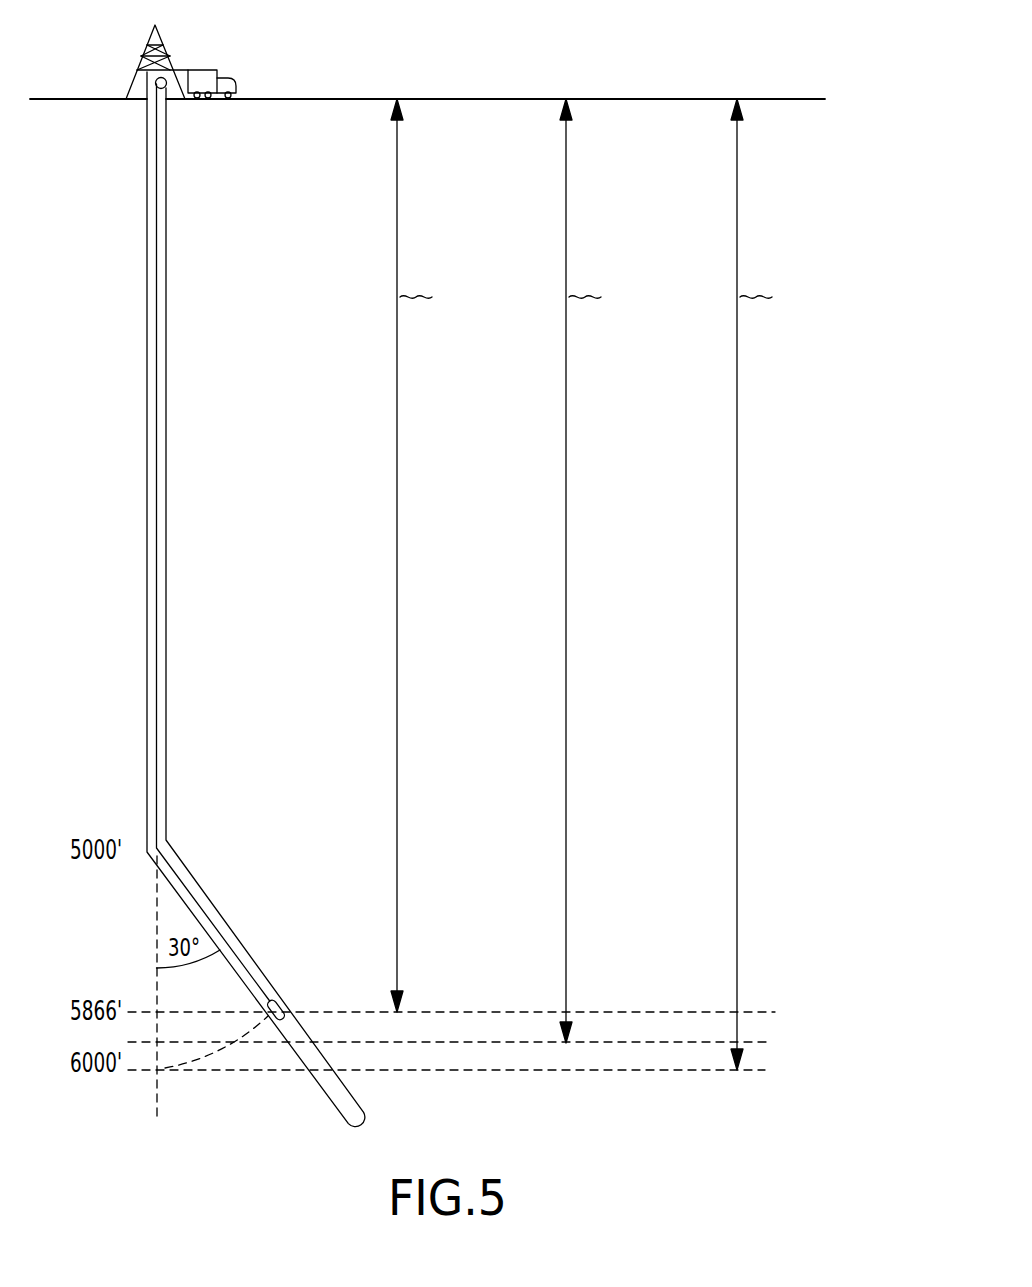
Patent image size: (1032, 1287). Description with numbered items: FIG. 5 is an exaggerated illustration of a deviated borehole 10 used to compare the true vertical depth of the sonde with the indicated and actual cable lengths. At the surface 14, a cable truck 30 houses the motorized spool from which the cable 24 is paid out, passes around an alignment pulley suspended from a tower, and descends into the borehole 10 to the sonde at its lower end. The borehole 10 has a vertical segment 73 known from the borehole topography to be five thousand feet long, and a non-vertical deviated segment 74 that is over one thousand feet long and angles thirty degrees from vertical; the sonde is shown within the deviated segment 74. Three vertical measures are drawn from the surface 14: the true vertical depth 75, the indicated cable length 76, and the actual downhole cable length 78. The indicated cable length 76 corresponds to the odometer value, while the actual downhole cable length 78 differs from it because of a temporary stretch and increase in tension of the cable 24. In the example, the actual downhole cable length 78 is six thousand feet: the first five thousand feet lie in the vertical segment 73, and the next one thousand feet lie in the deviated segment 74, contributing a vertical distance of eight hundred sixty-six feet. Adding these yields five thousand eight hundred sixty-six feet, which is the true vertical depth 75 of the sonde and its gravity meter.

The surface 14 is at (290, 99).
The cable truck 30 is at (205, 70).
The cable 24 is at (157, 226).
The vertical segment 73 is at (168, 302).
The borehole 10 is at (167, 432).
The deviated segment 74 is at (245, 952).
The true vertical depth 75 is at (466, 1010).
The indicated cable length 76 is at (632, 1042).
The actual downhole cable length 78 is at (758, 1070).